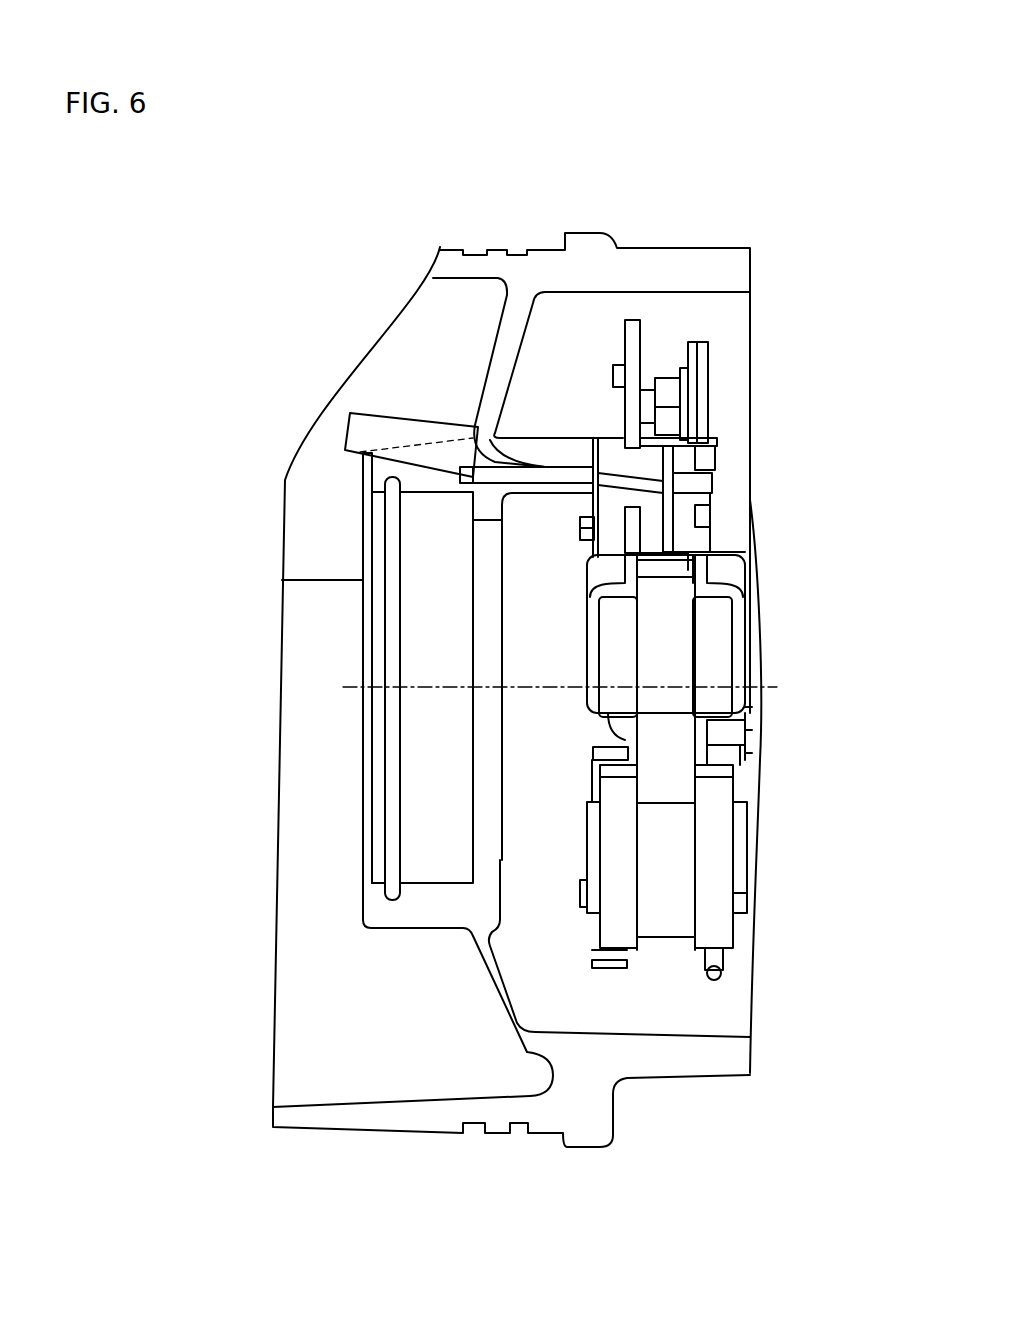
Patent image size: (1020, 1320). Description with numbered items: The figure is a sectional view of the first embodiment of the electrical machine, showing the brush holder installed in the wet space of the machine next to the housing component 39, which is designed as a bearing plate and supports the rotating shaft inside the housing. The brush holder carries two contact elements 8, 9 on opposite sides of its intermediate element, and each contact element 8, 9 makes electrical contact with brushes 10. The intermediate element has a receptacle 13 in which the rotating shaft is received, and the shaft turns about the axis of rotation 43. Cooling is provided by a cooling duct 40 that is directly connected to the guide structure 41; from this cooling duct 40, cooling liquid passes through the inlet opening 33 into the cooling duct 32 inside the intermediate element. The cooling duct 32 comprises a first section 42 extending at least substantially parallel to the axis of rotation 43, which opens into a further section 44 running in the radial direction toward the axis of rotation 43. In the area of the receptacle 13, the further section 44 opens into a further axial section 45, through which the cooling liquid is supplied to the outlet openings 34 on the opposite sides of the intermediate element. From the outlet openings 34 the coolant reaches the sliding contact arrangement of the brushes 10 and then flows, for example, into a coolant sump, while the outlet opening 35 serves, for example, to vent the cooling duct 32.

The first contact element 8 is at (713, 600).
The second contact element 9 is at (605, 593).
The brush 10 is at (605, 659).
The receptacle 13 is at (667, 618).
The cooling duct 32 is at (650, 485).
The inlet opening 33 is at (602, 435).
The outlet openings 34 is at (595, 553).
The outlet opening 35 is at (675, 448).
The housing component 39 is at (358, 473).
The cooling duct 40 is at (525, 477).
The guide structure 41 is at (375, 432).
The first section 42 is at (667, 505).
The axis of rotation 43 is at (777, 687).
The further section 44 is at (670, 535).
The further axial section 45 is at (688, 557).